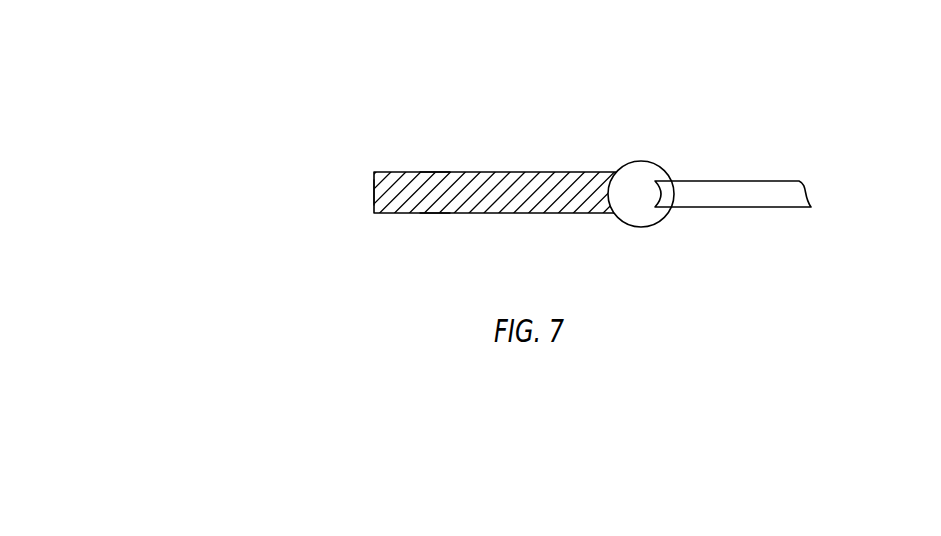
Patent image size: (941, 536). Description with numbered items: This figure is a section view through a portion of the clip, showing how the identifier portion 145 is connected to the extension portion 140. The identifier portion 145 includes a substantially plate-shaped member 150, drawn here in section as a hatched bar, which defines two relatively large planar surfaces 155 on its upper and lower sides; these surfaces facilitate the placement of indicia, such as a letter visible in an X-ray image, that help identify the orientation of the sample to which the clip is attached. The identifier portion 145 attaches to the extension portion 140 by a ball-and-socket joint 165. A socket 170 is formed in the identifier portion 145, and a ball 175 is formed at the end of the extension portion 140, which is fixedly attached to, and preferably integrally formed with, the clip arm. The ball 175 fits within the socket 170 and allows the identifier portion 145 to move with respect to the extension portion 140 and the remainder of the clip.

The extension portion 140 is at (782, 153).
The identifier portion 145 is at (489, 135).
The plate-shaped member 150 is at (298, 201).
The planar surfaces 155 is at (402, 188).
The ball-and-socket joint 165 is at (722, 120).
The socket 170 is at (644, 129).
The ball 175 is at (668, 258).